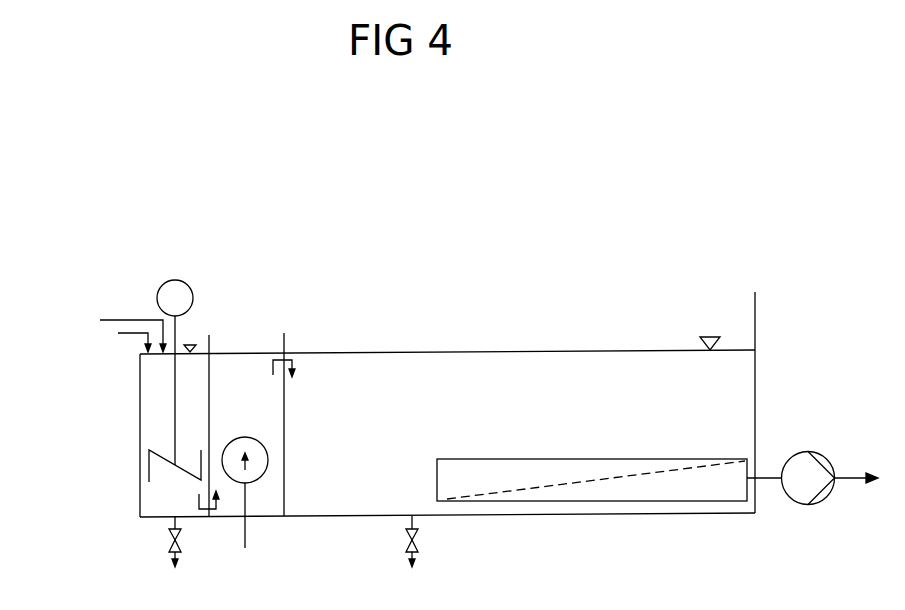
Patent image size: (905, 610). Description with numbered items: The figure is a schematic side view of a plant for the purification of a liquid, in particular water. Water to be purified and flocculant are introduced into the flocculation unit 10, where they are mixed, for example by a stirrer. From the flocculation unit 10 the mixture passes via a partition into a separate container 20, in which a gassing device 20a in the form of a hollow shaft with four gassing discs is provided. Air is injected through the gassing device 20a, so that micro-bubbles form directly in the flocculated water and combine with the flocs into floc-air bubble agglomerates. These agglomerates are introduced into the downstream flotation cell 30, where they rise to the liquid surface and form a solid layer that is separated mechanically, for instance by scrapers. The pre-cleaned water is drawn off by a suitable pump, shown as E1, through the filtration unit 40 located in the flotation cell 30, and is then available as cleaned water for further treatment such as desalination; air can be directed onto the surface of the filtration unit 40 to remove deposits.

The flocculation unit 10 is at (158, 494).
The container 20 is at (228, 509).
The gassing device 20a is at (244, 436).
The flotation cell 30 is at (510, 351).
The filtration unit 40 is at (728, 495).
The pump E1 is at (812, 494).